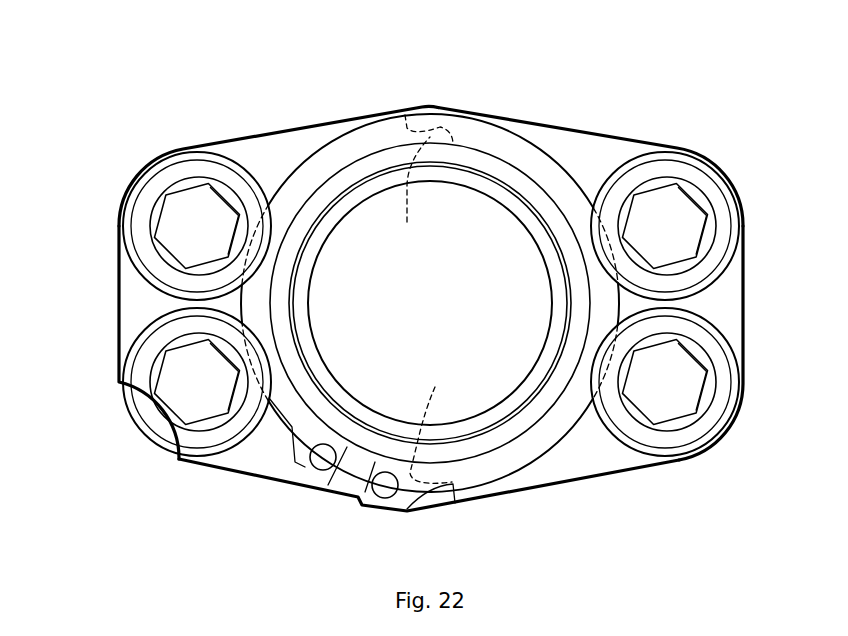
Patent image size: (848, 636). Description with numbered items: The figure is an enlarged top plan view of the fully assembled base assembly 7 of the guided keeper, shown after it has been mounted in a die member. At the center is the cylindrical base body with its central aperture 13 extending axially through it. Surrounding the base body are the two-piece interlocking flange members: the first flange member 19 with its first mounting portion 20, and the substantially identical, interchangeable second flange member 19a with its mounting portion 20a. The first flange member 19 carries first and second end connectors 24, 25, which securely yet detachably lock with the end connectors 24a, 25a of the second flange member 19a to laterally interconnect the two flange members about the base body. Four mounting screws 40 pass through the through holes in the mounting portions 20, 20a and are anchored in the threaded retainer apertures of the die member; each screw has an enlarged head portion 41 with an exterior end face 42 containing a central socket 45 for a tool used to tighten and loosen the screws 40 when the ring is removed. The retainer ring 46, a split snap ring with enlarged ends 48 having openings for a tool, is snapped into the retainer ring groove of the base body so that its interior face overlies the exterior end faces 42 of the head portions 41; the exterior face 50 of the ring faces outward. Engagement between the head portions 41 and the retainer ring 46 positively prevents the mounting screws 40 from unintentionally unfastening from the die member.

The base assembly 7 is at (715, 99).
The central aperture 13 is at (444, 310).
The first flange member 19 is at (124, 163).
The second flange member 19a is at (746, 178).
The first mounting portion 20 is at (128, 297).
The mounting portion 20a is at (727, 290).
The first end connector 24 is at (410, 193).
The end connector 24a is at (437, 418).
The second end connector 25 is at (437, 500).
The end connector 25a is at (422, 103).
The mounting screw 40 is at (157, 151).
The enlarged head portion 41 is at (228, 163).
The exterior end face 42 is at (140, 223).
The central socket 45 is at (654, 202).
The retainer ring 46 is at (535, 476).
The enlarged end 48 is at (305, 466).
The exterior face 50 is at (352, 140).